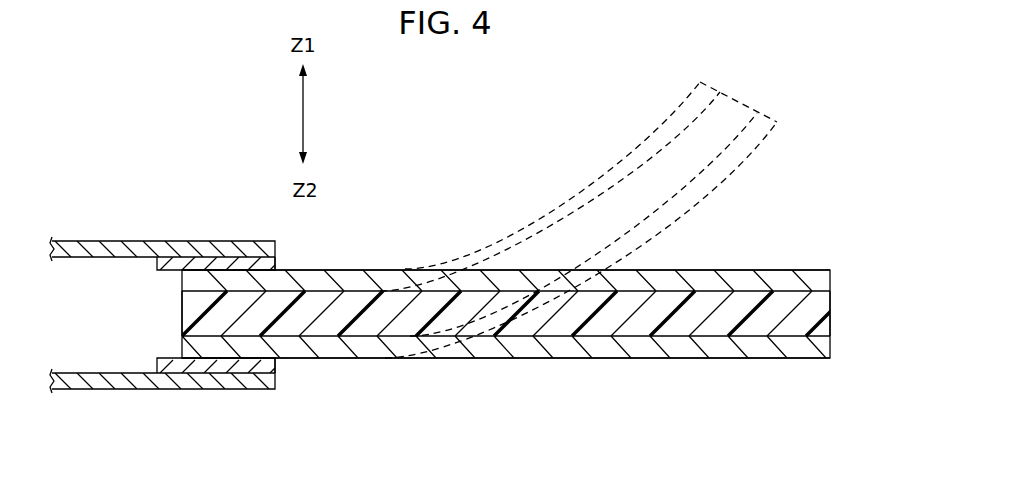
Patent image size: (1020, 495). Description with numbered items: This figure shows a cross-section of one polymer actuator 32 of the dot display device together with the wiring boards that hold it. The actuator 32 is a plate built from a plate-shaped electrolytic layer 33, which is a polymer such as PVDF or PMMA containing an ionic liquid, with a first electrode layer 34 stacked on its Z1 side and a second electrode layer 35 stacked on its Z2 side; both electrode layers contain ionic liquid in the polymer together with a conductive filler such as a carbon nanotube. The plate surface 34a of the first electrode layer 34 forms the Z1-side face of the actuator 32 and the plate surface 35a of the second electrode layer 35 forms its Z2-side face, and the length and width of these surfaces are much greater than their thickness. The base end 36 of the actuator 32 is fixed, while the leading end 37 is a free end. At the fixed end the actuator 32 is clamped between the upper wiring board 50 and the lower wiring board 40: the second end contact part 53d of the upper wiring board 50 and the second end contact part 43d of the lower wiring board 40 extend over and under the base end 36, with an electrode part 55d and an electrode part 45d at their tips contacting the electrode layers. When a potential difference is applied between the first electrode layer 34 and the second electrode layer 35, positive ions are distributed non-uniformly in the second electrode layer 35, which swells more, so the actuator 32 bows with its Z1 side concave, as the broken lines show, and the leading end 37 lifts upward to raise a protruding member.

The actuator 32 is at (515, 269).
The electrolytic layer 33 is at (788, 300).
The first electrode layer 34 is at (745, 285).
The plate surface 34a is at (695, 270).
The second electrode layer 35 is at (746, 348).
The plate surface 35a is at (688, 358).
The base end 36 is at (214, 345).
The leading end 37 is at (797, 342).
The lower wiring board 40 is at (115, 389).
The second end contact part 43d is at (258, 390).
The lower protrusion surface 45d is at (277, 368).
The upper wiring board 50 is at (114, 241).
The second end contact part 53d is at (226, 241).
The upper protrusion surface 55d is at (277, 263).